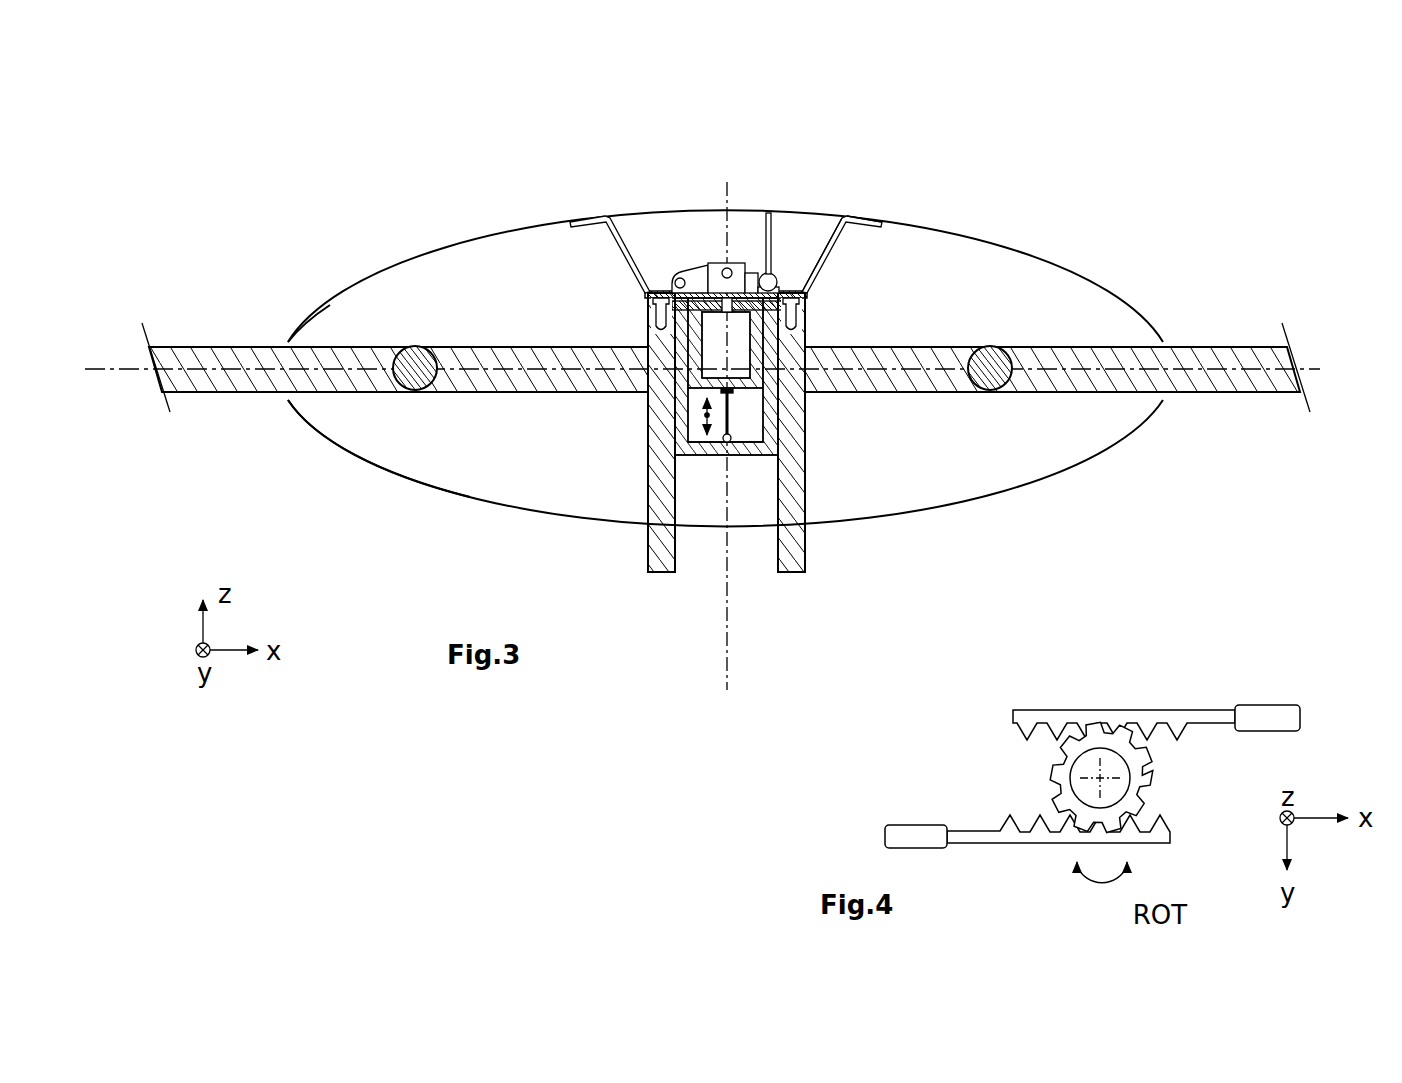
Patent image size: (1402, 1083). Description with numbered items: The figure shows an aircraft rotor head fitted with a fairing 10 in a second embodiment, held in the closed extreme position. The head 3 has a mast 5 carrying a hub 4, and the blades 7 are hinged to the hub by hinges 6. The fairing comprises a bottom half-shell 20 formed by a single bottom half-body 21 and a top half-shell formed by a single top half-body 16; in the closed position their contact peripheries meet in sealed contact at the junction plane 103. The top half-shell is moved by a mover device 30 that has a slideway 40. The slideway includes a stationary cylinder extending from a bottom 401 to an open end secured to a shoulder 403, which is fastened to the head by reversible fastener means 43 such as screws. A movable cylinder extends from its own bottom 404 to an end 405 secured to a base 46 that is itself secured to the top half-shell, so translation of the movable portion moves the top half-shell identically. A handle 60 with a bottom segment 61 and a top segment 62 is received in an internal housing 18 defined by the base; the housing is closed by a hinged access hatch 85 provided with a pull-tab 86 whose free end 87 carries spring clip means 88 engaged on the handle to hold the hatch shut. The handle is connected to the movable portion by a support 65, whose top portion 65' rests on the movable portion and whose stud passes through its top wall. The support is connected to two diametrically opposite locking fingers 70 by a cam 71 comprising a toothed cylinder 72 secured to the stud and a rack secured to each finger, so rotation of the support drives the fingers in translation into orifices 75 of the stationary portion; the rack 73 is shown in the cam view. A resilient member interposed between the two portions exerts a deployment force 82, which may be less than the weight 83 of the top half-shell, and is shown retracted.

In FIG. 3, the fairing 10 is at (1131, 262).
In FIG. 3, the top half-body 16 is at (322, 307).
In FIG. 3, the bottom half-shell 20 is at (1063, 475).
In FIG. 3, the bottom half-body 21 is at (467, 497).
In FIG. 3, the head 3 is at (927, 408).
In FIG. 3, the junction plane 103 is at (105, 366).
In FIG. 3, the hub 4 is at (470, 393).
In FIG. 3, the blades 7 is at (1217, 346).
In FIG. 3, the hinge 6 is at (997, 350).
In FIG. 3, the mover device 30 is at (735, 513).
In FIG. 3, the mast 5 is at (662, 556).
In FIG. 3, the slideway 40 is at (740, 467).
In FIG. 3, the bottom 404 is at (738, 396).
In FIG. 3, the bottom 401 is at (717, 456).
In FIG. 3, the weight 83 is at (705, 430).
In FIG. 3, the deployment force 82 is at (700, 428).
In FIG. 3, the cam 71 is at (720, 326).
In FIG. 4, the cam 71 is at (1014, 788).
In FIG. 3, the reversible fastener means 43 is at (647, 312).
In FIG. 3, the shoulder 403 is at (808, 303).
In FIG. 3, the locking finger 70 is at (656, 325).
In FIG. 4, the locking finger 70 is at (1270, 712).
In FIG. 3, the internal housing 18 is at (782, 264).
In FIG. 3, the access hatch 85 is at (845, 236).
In FIG. 3, the base 46 is at (833, 262).
In FIG. 3, the orifice 75 is at (668, 281).
In FIG. 3, the support 65 is at (736, 225).
In FIG. 3, the free end 87 is at (784, 266).
In FIG. 3, the spring clip means 88 is at (785, 287).
In FIG. 3, the top segment 62 is at (776, 274).
In FIG. 3, the pull-tab 86 is at (773, 240).
In FIG. 3, the handle 60 is at (710, 246).
In FIG. 3, the bottom segment 61 is at (697, 278).
In FIG. 3, the end 405 is at (660, 262).
In FIG. 3, the top portion 65' is at (772, 194).
In FIG. 4, the rack 73 is at (1145, 710).
In FIG. 4, the toothed cylinder 72 is at (1120, 766).